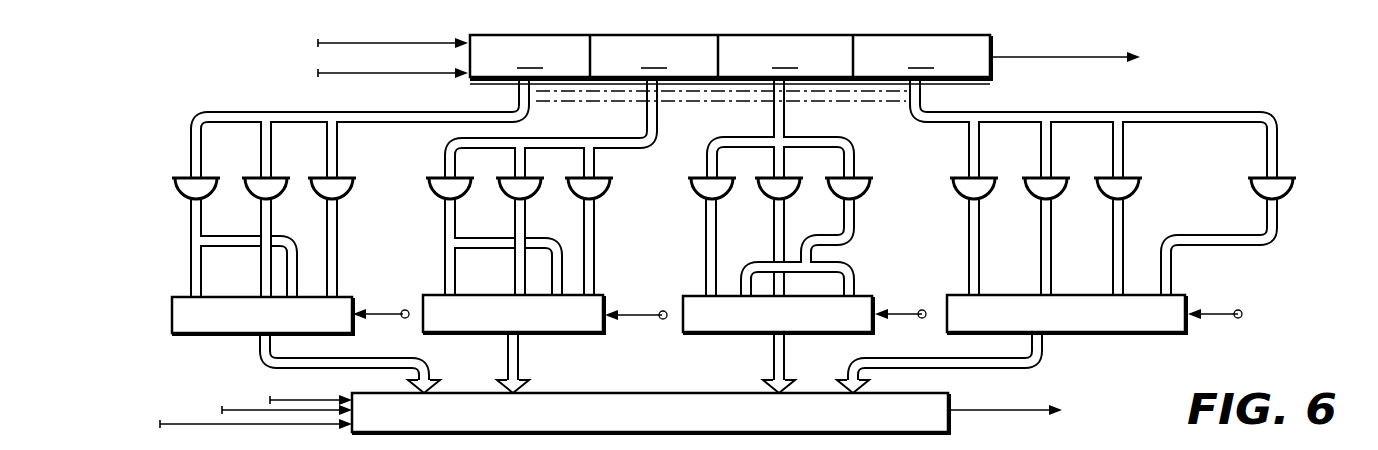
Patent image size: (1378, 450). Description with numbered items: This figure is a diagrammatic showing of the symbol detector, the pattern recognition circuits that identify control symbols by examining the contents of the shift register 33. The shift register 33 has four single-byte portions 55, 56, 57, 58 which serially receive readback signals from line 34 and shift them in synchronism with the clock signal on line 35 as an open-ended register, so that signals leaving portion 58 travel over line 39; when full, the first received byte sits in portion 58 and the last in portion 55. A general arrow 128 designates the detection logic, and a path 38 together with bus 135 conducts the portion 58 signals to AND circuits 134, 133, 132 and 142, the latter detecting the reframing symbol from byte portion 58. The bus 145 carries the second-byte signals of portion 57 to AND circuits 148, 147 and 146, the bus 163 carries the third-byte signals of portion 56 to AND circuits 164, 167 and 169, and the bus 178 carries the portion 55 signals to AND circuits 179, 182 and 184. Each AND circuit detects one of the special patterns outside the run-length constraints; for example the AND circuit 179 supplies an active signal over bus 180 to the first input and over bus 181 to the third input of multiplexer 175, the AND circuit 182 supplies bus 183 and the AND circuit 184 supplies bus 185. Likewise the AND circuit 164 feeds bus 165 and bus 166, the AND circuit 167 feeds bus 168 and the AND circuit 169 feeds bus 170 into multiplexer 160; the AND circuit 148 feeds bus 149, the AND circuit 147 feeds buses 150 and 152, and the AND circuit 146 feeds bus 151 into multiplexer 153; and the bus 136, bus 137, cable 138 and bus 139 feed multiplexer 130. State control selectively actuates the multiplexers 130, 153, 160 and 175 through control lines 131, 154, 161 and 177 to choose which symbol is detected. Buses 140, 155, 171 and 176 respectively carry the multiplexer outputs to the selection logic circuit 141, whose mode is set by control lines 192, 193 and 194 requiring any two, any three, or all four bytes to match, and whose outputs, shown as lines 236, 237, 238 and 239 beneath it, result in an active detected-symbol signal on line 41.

The shift register 33 is at (998, 47).
The line 34 is at (356, 48).
The line 35 is at (445, 70).
The line 39 is at (1133, 36).
The bus 38 is at (924, 98).
The single-byte portion 55 is at (530, 56).
The single-byte portion 56 is at (654, 56).
The single-byte portion 57 is at (785, 56).
The single-byte portion 58 is at (921, 56).
The selection circuit 128 is at (1212, 93).
The bus 135 is at (1076, 113).
The bus 145 is at (786, 119).
The bus 178 is at (298, 113).
The bus 163 is at (447, 140).
The AND circuit 179 is at (238, 159).
The AND circuit 182 is at (302, 160).
The AND circuit 184 is at (372, 159).
The AND circuit 164 is at (484, 172).
The AND circuit 167 is at (533, 158).
The AND circuit 169 is at (606, 158).
The AND circuit 148 is at (735, 170).
The AND circuit 147 is at (806, 170).
The AND circuit 146 is at (856, 177).
The AND circuit 134 is at (1010, 168).
The AND circuit 133 is at (1082, 168).
The AND circuit 132 is at (1154, 168).
The AND circuit 142 is at (1286, 176).
The bus 180 is at (201, 266).
The bus 181 is at (300, 228).
The bus 183 is at (261, 283).
The bus 185 is at (339, 270).
The bus 165 is at (447, 236).
The bus 168 is at (504, 207).
The bus 166 is at (572, 225).
The bus 170 is at (594, 230).
The bus 149 is at (705, 235).
The bus 150 is at (736, 272).
The bus 151 is at (798, 241).
The bus 152 is at (858, 283).
The bus 136 is at (981, 226).
The bus 137 is at (1052, 226).
The cable 138 is at (1126, 212).
The bus 139 is at (1218, 234).
The control line 177 is at (401, 311).
The control line 161 is at (655, 310).
The control line 154 is at (927, 310).
The control line 131 is at (1230, 308).
The multiplexer 175 is at (318, 339).
The bus 176 is at (382, 339).
The bus 171 is at (521, 366).
The multiplexer 160 is at (584, 344).
The multiplexer 153 is at (692, 342).
The bus 155 is at (767, 361).
The bus 140 is at (925, 357).
The multiplexer 130 is at (1135, 334).
The selection logic circuit 141 is at (955, 406).
The line 41 is at (1033, 408).
The control line 192 is at (190, 416).
The control line 193 is at (245, 380).
The control line 194 is at (315, 380).
The signal line 236 is at (481, 445).
The signal line 237 is at (651, 445).
The signal line 238 is at (816, 445).
The signal line 239 is at (986, 445).